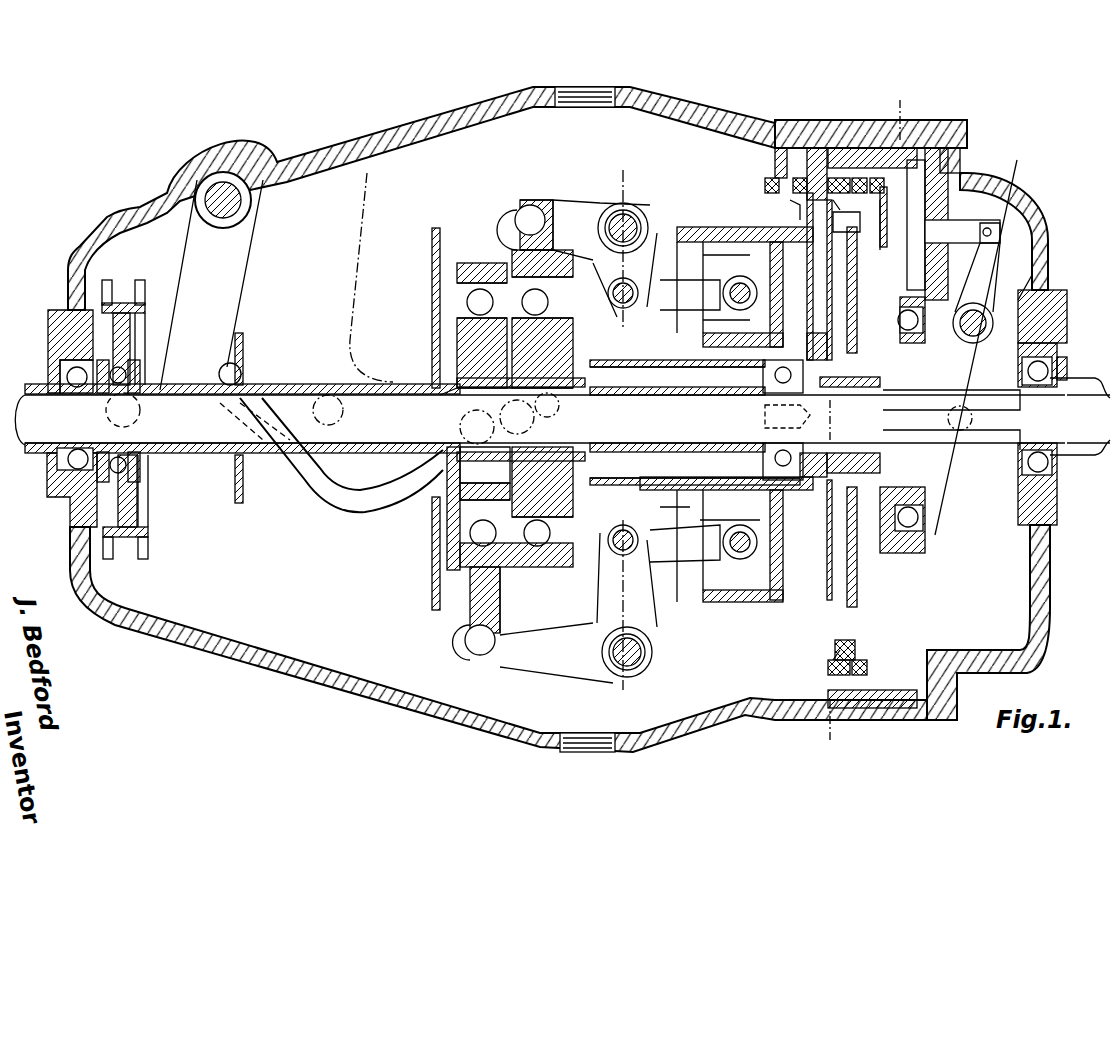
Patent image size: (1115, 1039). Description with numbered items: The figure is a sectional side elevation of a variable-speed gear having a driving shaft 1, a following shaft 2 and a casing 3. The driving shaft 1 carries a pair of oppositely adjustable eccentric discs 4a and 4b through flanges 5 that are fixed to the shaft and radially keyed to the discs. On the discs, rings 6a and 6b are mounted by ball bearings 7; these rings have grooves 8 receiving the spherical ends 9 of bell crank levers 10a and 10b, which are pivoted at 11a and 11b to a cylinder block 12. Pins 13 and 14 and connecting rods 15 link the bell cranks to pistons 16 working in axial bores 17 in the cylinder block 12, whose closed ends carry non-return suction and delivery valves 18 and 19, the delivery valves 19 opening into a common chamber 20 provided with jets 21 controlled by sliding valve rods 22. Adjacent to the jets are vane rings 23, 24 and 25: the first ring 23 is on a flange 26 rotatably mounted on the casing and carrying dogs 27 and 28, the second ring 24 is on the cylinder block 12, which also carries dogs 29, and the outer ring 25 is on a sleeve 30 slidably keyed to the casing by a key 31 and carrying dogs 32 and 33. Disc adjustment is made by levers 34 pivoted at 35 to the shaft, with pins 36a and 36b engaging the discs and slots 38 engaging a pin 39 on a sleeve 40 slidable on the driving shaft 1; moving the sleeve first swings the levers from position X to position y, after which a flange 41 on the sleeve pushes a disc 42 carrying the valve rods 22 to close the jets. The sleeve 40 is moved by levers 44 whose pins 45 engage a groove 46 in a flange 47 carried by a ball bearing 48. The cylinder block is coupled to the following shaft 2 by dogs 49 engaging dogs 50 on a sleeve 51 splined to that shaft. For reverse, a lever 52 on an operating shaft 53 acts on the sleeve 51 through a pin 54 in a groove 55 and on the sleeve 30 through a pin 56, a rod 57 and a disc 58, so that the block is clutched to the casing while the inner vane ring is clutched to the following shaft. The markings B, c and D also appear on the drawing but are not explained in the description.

The driving shaft 1 is at (48, 430).
The following shaft 2 is at (1080, 400).
The casing 3 is at (686, 108).
The adjustable disc 4a is at (470, 500).
The adjustable disc 4b is at (600, 398).
The flanges 5 is at (525, 350).
The ring 6a is at (480, 623).
The ring 6b is at (533, 200).
The ball bearings 7 is at (525, 300).
The grooves 8 is at (520, 218).
The ends 9 is at (545, 228).
The bell crank lever 10a is at (580, 650).
The bell crank lever 10b is at (645, 222).
The pivot 11a is at (652, 652).
The pivot 11b is at (618, 205).
The cylinder block 12 is at (718, 227).
The pin 13 is at (628, 305).
The pin 14 is at (742, 275).
The connecting rods 15 is at (684, 436).
The pistons 16 is at (690, 230).
The bores 17 is at (722, 262).
The suction valve 18 is at (730, 545).
The delivery valve 19 is at (830, 280).
The common chamber 20 is at (858, 265).
The jets 21 is at (760, 185).
The sliding valve rods 22 is at (560, 580).
The first vane ring 23 is at (868, 235).
The second vane ring 24 is at (868, 215).
The outer vane ring 25 is at (838, 178).
The flange 26 is at (930, 210).
The dogs 27 is at (873, 187).
The dogs 28 is at (940, 330).
The dogs 29 is at (772, 180).
The sleeve 30 is at (880, 148).
The key 31 is at (792, 148).
The dogs 32 is at (858, 178).
The dogs 33 is at (798, 180).
The levers 34 is at (340, 505).
The pivot 35 is at (455, 388).
The pin 36a is at (470, 405).
The pin 36b is at (565, 410).
The slots 38 is at (360, 515).
The pin 39 is at (242, 372).
The sleeve 40 is at (195, 384).
The flange 41 is at (245, 340).
The disc 42 is at (432, 286).
The levers 44 is at (220, 253).
The pins 45 is at (140, 415).
The groove 46 is at (130, 300).
The flange 47 is at (148, 518).
The ball bearing 48 is at (140, 478).
The dogs 49 is at (765, 410).
The dogs 50 is at (763, 379).
The sleeve 51 is at (975, 440).
The lever 52 is at (1000, 255).
The operating shaft 53 is at (955, 395).
The pin 54 is at (1060, 313).
The groove 55 is at (1035, 345).
The pin 56 is at (992, 230).
The rod 57 is at (1012, 185).
The disc 58 is at (918, 175).
The section line B is at (905, 428).
The section line c is at (842, 574).
The section line D is at (603, 427).
The position x X is at (310, 476).
The position y is at (353, 277).